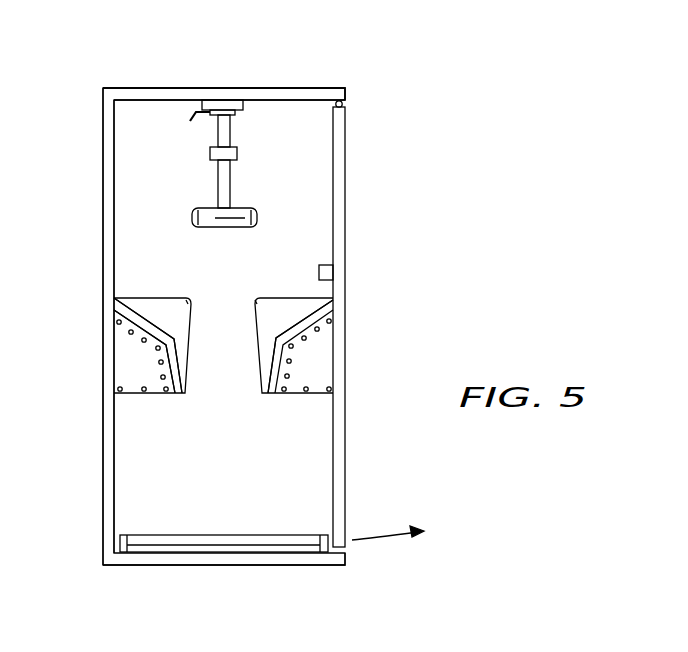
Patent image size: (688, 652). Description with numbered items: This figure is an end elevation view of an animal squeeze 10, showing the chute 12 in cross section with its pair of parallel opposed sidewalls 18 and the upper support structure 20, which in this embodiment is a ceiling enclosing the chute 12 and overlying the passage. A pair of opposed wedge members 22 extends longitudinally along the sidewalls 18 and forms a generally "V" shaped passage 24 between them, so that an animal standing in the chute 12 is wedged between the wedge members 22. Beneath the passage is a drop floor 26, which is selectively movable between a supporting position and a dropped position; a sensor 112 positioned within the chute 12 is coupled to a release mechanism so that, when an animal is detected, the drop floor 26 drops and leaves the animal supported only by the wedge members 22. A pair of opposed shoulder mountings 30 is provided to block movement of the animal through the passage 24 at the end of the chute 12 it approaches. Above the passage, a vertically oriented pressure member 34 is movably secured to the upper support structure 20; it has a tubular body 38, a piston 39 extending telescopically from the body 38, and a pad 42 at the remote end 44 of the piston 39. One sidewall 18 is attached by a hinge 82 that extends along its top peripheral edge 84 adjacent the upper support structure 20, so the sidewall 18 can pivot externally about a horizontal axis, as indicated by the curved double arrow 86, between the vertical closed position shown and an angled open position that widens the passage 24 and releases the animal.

The animal squeeze 10 is at (383, 158).
The chute 12 is at (162, 78).
The sidewalls 18 is at (103, 358).
The upper support structure 20 is at (297, 88).
The wedge members 22 is at (148, 376).
The "V" shaped passage 24 is at (232, 324).
The drop floor 26 is at (236, 535).
The shoulder mountings 30 is at (158, 305).
The pressure member 34 is at (247, 167).
The tubular body 38 is at (217, 130).
The piston 39 is at (218, 185).
The pad 42 is at (192, 216).
The remote end 44 is at (220, 203).
The hinge 82 is at (343, 104).
The top peripheral edge 84 is at (346, 118).
The curved double arrow 86 is at (386, 537).
The sensor 112 is at (332, 266).